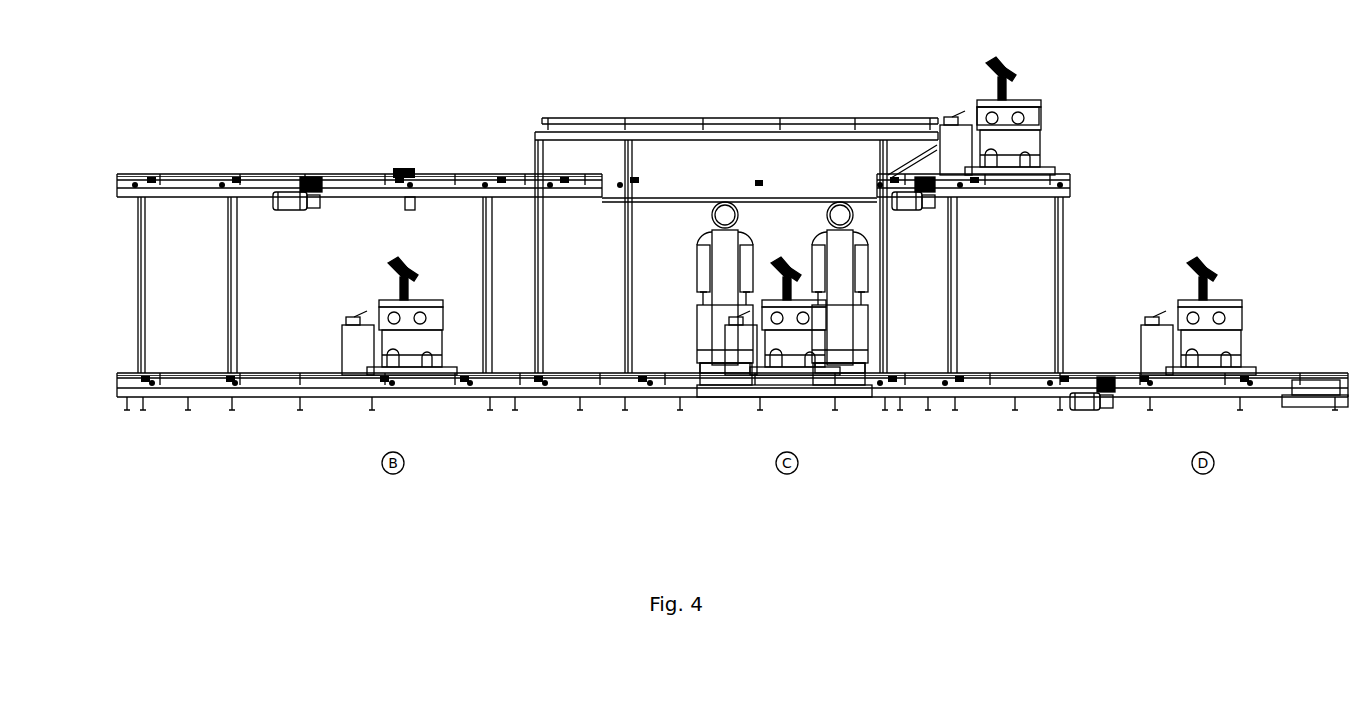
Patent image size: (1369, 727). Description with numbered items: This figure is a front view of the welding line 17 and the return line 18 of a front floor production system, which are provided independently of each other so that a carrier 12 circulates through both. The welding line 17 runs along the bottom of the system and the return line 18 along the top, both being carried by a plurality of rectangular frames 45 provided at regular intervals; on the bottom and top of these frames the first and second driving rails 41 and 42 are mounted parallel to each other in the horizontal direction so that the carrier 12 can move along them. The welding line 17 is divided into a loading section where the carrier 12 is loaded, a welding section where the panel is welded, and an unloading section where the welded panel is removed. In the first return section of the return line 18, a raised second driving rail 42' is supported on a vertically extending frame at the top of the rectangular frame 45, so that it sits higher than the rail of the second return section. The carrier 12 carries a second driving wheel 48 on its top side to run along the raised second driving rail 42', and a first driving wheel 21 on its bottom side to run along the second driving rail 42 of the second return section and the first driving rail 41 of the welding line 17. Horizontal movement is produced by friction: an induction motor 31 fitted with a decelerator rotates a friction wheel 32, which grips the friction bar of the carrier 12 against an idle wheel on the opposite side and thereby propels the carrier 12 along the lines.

The carrier 12 is at (1027, 83).
The welding line 17 is at (208, 412).
The return line 18 is at (244, 163).
The first driving wheel 21 is at (975, 205).
The induction motor 31 is at (292, 210).
The friction wheel 32 is at (328, 185).
The first driving rail 41 is at (158, 377).
The second driving rail 42 is at (593, 150).
The second driving rail of the first return section 42' is at (736, 109).
The rectangular frame 45 is at (138, 311).
The second driving wheel 48 is at (982, 107).